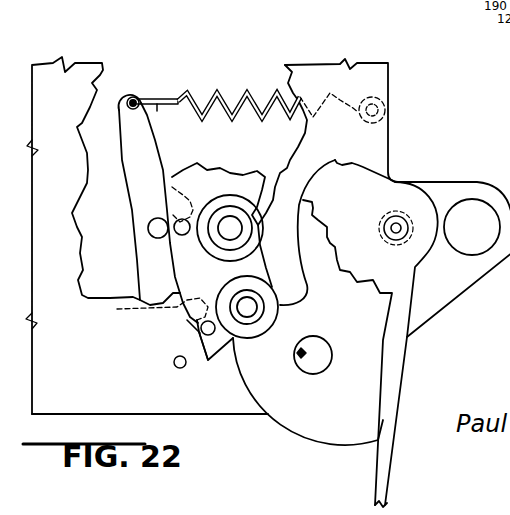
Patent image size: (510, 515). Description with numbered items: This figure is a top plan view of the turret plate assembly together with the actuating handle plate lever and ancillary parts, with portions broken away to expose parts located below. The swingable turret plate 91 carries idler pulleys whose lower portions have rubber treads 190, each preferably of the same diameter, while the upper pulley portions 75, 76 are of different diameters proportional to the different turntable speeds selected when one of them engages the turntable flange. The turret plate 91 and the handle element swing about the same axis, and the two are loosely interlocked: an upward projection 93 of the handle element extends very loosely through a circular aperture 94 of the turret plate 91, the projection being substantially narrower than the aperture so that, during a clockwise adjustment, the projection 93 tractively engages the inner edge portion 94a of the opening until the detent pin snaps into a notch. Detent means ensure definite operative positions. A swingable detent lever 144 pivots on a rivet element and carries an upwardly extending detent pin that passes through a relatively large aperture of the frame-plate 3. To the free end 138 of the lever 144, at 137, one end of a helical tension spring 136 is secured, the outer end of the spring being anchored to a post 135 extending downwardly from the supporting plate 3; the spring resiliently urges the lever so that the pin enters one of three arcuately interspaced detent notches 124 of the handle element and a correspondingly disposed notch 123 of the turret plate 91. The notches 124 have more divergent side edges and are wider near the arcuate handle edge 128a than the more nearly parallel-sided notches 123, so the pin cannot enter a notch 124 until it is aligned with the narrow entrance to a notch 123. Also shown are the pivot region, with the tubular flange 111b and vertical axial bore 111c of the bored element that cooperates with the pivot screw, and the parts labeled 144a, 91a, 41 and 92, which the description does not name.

The frame-plate 3 is at (366, 150).
The post 135 is at (372, 148).
The detent lever 144 is at (140, 160).
The free end 138 is at (131, 92).
The spring attachment point 137 is at (141, 97).
The helical tension spring 136 is at (223, 101).
The detent notches 124 is at (172, 200).
The roller 144a is at (155, 231).
The detent notches 123 is at (180, 230).
The upper pulley portion 76 is at (238, 236).
The upper pulley portion 75 is at (250, 308).
The rubber treads 190 is at (208, 258).
The turret plate 91 is at (315, 418).
The cam plate tip 91a is at (207, 358).
The handle edge 128a is at (195, 333).
The pin 41 is at (173, 362).
The upward projection 93 is at (296, 360).
The circular aperture 94 is at (331, 348).
The inner edge portion 94a is at (298, 354).
The plate 92 is at (398, 225).
The vertical axial bore 111c is at (392, 221).
The tubular flange 111b is at (406, 238).